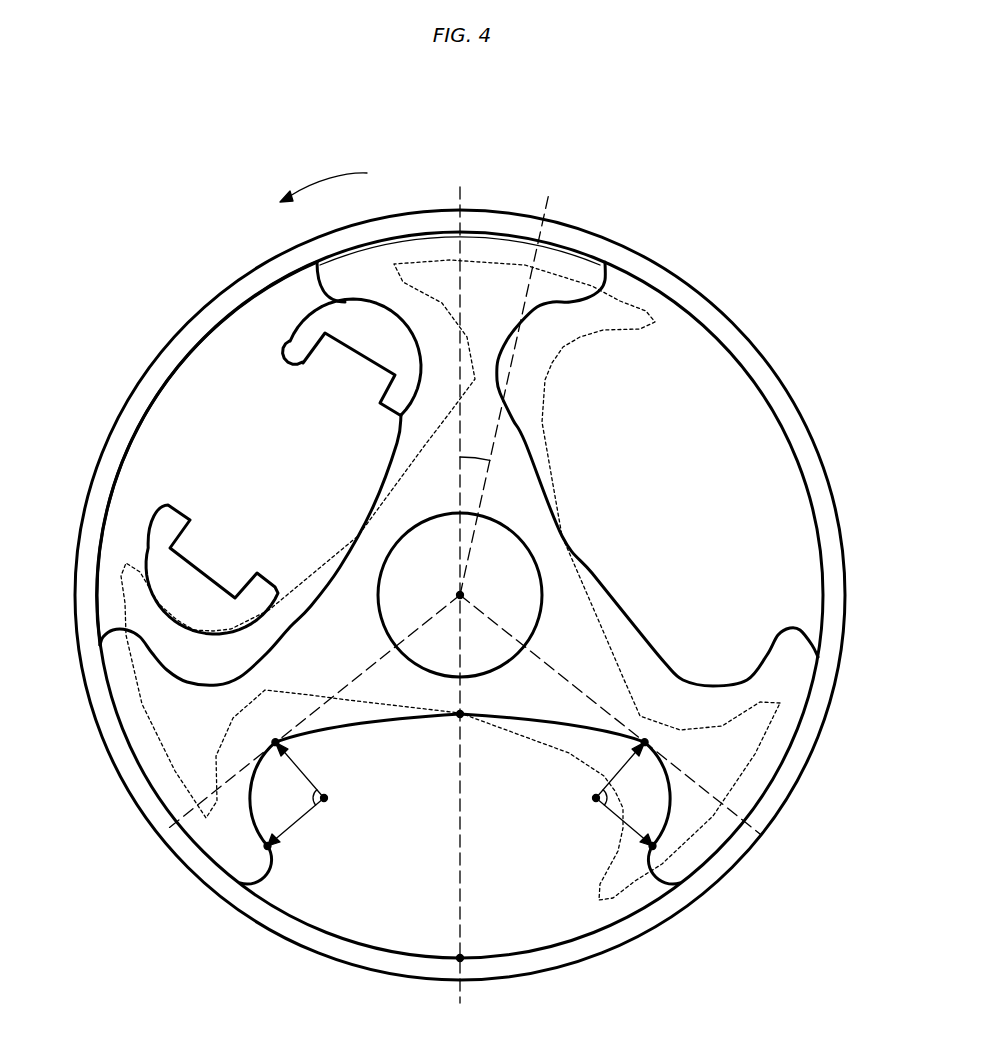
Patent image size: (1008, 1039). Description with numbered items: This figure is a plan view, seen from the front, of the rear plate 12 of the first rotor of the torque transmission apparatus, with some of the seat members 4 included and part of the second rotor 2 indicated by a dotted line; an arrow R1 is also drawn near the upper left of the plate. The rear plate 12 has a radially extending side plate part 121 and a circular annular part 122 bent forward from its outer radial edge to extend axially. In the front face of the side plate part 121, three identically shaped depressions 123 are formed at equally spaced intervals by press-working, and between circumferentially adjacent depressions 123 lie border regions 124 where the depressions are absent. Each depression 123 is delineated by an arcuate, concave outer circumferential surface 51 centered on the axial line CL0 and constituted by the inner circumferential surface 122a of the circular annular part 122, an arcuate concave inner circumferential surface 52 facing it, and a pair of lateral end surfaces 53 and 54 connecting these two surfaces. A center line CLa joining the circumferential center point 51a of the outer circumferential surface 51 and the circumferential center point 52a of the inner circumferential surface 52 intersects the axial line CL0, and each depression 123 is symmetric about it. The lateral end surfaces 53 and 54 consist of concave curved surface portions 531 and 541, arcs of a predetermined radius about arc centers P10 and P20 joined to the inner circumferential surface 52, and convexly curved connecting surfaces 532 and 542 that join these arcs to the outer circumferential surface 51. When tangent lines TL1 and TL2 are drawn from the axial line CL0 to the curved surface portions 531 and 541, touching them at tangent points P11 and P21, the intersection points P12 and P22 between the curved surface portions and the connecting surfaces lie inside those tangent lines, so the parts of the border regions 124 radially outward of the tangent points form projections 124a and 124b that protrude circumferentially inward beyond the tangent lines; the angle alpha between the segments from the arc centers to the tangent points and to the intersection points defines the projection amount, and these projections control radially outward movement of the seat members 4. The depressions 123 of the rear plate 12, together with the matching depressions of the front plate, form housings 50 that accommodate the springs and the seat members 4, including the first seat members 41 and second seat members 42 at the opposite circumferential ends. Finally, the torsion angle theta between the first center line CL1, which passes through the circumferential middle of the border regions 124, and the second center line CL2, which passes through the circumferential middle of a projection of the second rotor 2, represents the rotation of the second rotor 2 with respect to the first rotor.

The rear plate 12 is at (466, 584).
The side plate part 121 is at (760, 456).
The circular annular part 122 is at (707, 299).
The inner circumferential surface 122a is at (233, 318).
The depression 123 is at (734, 403).
The border region 124 is at (387, 257).
The projection 124a is at (230, 845).
The projection 124b is at (705, 817).
The second rotor 2 is at (546, 380).
The seat member 4 is at (236, 441).
The first seat member 41 is at (338, 313).
The second seat member 42 is at (164, 541).
The housing 50 is at (434, 621).
The outer circumferential surface 51 is at (203, 340).
The circumferential center point 51a is at (466, 963).
The inner circumferential surface 52 is at (330, 572).
The circumferential center point 52a is at (462, 712).
The lateral end surface 53 is at (390, 313).
The lateral end surface 54 is at (178, 673).
The curved surface portion 531 is at (253, 800).
The connecting surface 532 is at (267, 860).
The curved surface portion 541 is at (668, 803).
The connecting surface 542 is at (657, 880).
The axial line CL0 is at (481, 596).
The first center line CL1 is at (460, 580).
The second center line CL2 is at (512, 381).
The center line CLa is at (454, 1020).
The tangent line TL1 is at (160, 835).
The tangent line TL2 is at (762, 840).
The arc center P10 is at (318, 794).
The tangent point P11 is at (278, 740).
The intersection point P12 is at (258, 860).
The arc center P20 is at (604, 794).
The tangent point P21 is at (643, 740).
The intersection point P22 is at (665, 855).
The rotation direction R1 is at (323, 180).
The torsion angle theta is at (475, 447).